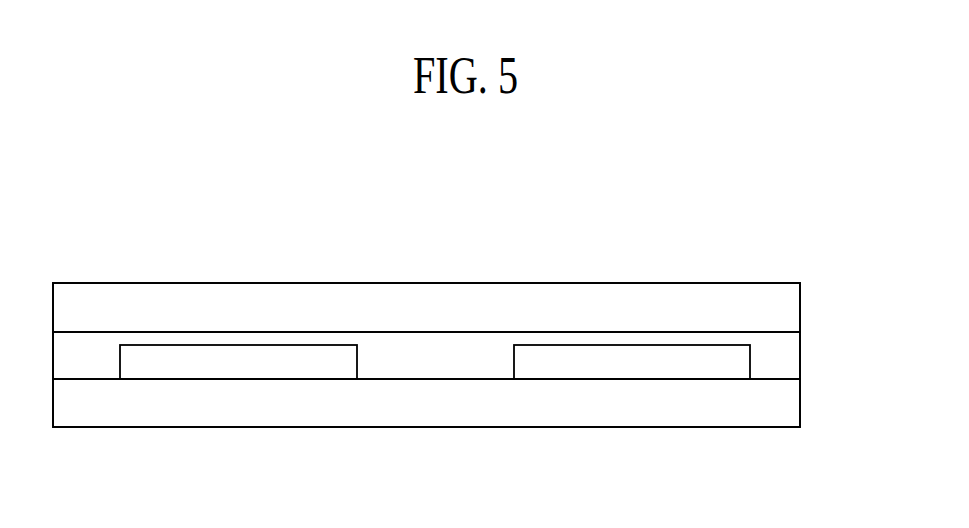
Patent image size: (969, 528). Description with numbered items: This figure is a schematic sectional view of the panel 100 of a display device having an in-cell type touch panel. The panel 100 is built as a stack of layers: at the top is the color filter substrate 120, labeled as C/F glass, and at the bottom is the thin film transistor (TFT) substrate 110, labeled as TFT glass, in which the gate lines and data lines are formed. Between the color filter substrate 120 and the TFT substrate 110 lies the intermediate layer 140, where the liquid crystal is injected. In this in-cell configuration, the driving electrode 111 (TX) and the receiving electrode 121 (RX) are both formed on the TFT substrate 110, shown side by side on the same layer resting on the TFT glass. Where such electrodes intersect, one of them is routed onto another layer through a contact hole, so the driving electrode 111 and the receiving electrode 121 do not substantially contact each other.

The panel 100 is at (188, 230).
The color filter substrate 120 is at (800, 305).
The liquid crystal layer / gap between substrates 140 is at (800, 352).
The thin film transistor (TFT) substrate 110 is at (800, 402).
The driving electrode 111 is at (131, 373).
The receiving electrode 121 is at (697, 373).